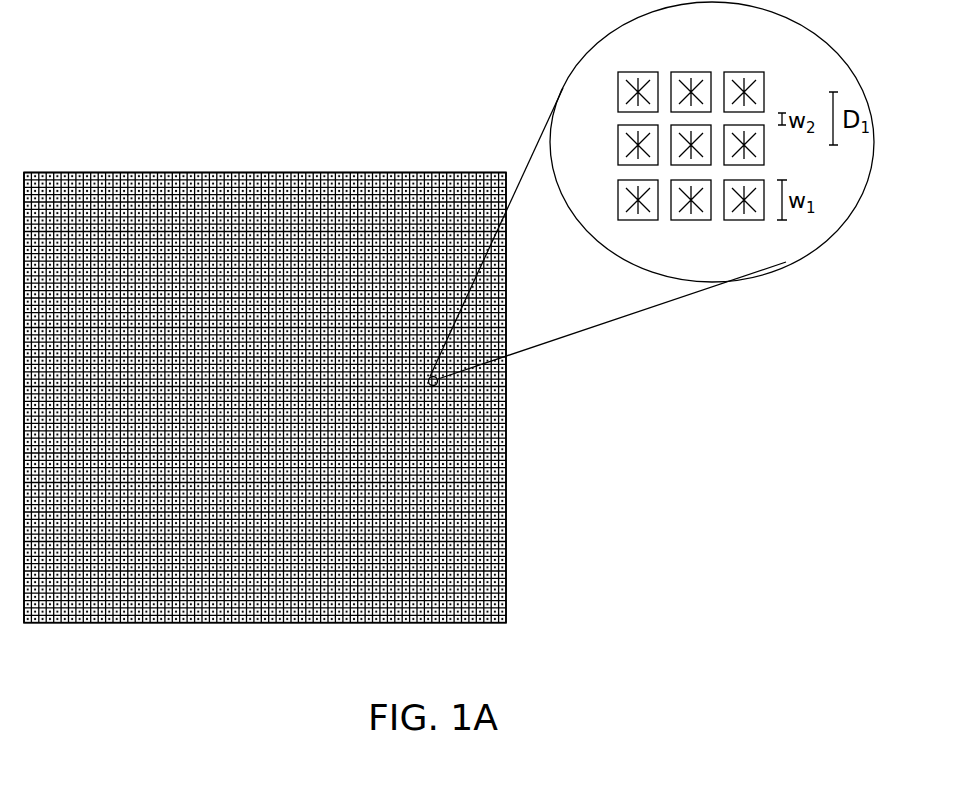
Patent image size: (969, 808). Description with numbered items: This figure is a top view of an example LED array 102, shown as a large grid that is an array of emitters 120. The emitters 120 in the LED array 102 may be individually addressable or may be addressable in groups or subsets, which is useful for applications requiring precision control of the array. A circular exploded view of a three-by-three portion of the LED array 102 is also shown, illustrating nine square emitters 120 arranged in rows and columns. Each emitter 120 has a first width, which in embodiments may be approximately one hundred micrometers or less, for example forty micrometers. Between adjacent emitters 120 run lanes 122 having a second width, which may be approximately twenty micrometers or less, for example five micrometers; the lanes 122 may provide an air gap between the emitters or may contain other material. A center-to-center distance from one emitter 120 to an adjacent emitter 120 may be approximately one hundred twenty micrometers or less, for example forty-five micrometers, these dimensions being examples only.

The LED array 102 is at (343, 161).
The emitters 120 is at (694, 80).
The lanes 122 is at (632, 173).